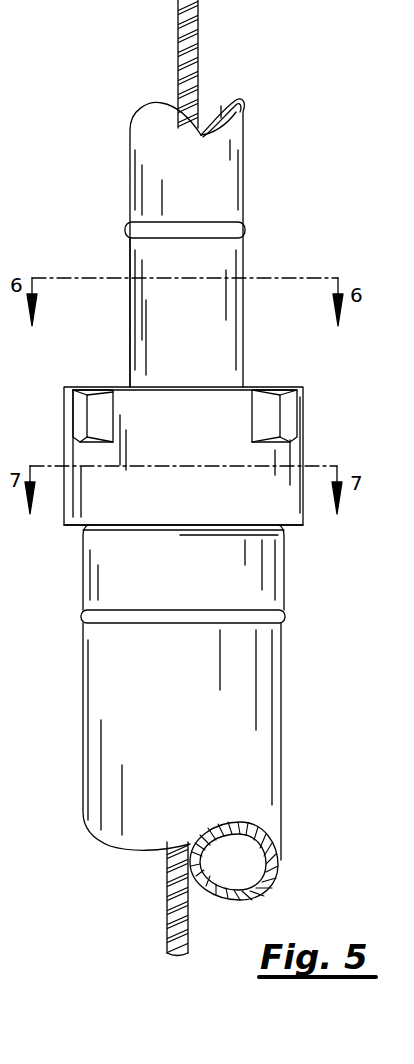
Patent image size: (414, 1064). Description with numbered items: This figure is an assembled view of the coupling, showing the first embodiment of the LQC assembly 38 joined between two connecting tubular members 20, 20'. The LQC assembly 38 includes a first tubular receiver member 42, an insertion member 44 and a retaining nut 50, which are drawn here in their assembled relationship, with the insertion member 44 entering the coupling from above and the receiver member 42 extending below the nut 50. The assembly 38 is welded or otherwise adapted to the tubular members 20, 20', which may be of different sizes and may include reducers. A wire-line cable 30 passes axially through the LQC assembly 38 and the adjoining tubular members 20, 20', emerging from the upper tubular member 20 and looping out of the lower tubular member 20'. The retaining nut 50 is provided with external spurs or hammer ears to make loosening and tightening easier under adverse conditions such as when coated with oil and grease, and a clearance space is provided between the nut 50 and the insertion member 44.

The tubular member 20 is at (151, 243).
The tubular member 20' is at (214, 741).
The wire-line cable 30 is at (188, 43).
The LQC assembly 38 is at (292, 568).
The first tubular receiver member 42 is at (113, 577).
The insertion member 44 is at (155, 352).
The retaining nut 50 is at (222, 415).